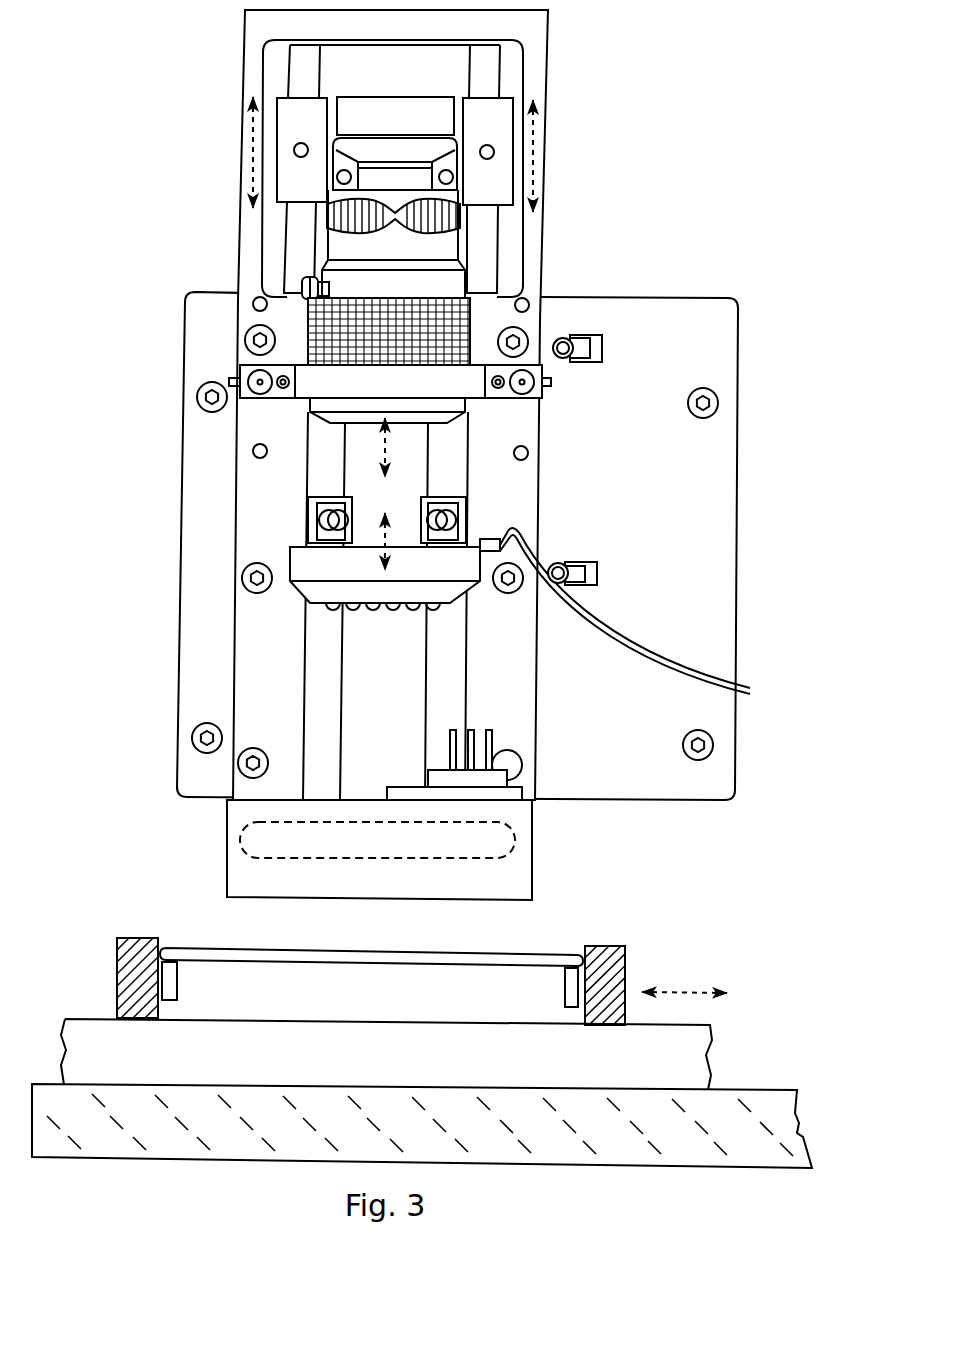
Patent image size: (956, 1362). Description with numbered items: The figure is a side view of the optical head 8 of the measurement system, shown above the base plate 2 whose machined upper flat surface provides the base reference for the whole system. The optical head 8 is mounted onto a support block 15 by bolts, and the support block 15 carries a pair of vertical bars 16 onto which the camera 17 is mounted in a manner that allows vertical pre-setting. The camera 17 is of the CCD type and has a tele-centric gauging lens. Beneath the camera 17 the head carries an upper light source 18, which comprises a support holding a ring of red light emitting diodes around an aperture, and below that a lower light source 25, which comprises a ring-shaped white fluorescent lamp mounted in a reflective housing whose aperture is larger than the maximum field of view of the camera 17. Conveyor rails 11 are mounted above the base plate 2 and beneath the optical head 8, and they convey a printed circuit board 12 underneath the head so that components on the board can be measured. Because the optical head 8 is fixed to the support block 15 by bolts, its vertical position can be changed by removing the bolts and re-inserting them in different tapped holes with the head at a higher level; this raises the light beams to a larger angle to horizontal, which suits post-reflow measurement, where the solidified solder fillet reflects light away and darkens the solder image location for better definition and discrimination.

The base plate 2 is at (760, 1090).
The optical head 8 is at (725, 135).
The conveyor rails 11 is at (137, 935).
The printed circuit board 12 is at (523, 950).
The support block 15 is at (170, 290).
The vertical bars 16 is at (298, 60).
The camera 17 is at (484, 316).
The upper light source 18 is at (275, 545).
The lower light source 25 is at (212, 841).